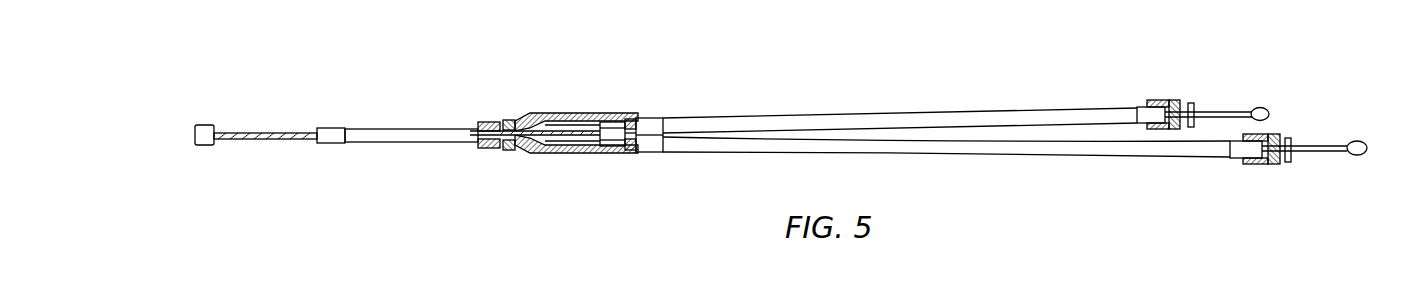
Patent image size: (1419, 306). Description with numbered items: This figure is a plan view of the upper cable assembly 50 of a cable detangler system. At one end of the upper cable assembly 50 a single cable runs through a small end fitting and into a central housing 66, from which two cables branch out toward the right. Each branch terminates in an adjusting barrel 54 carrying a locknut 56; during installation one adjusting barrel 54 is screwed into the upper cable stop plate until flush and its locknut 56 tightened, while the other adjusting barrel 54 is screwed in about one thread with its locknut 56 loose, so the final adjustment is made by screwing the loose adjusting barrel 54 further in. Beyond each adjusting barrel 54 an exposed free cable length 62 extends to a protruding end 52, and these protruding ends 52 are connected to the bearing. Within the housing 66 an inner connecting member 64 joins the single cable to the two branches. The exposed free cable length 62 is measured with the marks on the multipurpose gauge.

The upper cable assembly 50 is at (698, 92).
The protruding end 52 is at (1258, 107).
The adjusting barrel 54 is at (1176, 101).
The locknut 56 is at (1287, 165).
The exposed free cable length 62 is at (1220, 110).
The inner connector 64 is at (617, 154).
The housing 66 is at (573, 111).